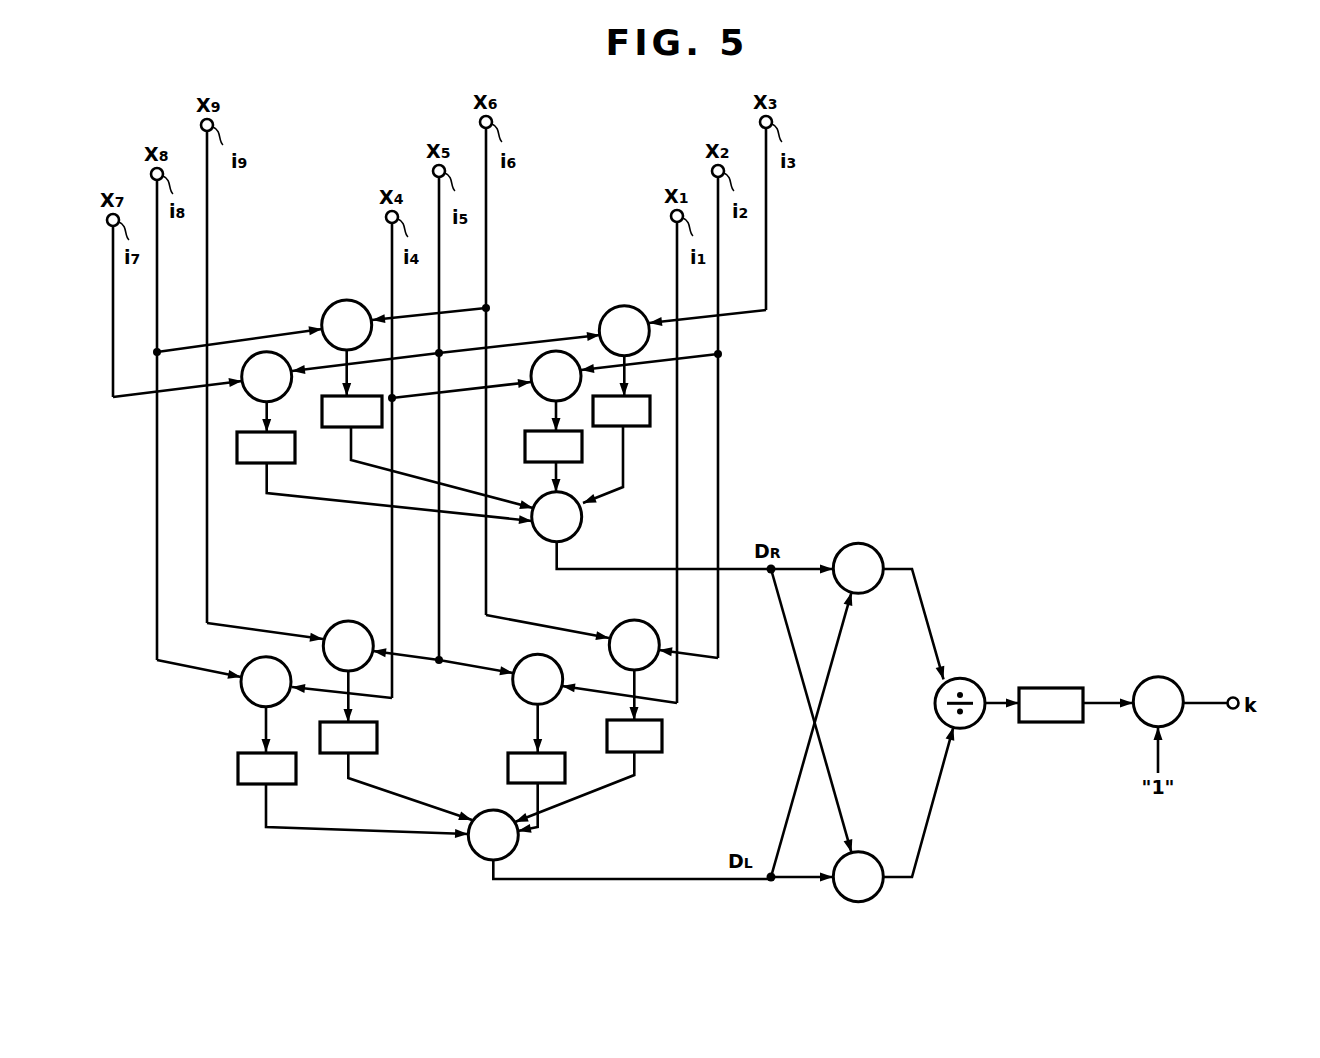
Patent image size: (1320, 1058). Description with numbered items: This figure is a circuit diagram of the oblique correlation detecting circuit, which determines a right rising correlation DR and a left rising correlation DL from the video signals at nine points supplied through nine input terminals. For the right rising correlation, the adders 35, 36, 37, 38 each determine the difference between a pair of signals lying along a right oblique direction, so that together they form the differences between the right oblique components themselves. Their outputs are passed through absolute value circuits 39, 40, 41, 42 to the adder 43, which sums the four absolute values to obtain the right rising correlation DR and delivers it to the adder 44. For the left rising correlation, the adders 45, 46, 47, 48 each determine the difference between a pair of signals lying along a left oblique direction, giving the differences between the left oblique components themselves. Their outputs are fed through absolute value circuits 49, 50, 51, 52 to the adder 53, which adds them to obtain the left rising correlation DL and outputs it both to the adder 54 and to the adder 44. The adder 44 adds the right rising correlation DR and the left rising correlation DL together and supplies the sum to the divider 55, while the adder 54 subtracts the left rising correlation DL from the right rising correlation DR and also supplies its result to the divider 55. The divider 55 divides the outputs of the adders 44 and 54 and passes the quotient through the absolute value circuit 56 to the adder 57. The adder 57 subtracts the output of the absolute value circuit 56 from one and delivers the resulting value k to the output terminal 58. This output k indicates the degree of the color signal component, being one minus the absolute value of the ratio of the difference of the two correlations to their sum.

The adder 35 is at (556, 351).
The adder 36 is at (624, 306).
The adder 37 is at (267, 351).
The adder 38 is at (346, 300).
The absolute value circuit 39 is at (525, 445).
The absolute value circuit 40 is at (636, 427).
The absolute value circuit 41 is at (255, 463).
The absolute value circuit 42 is at (335, 427).
The adder 43 is at (582, 522).
The adder 44 is at (858, 543).
The adder 45 is at (513, 690).
The adder 46 is at (634, 620).
The adder 47 is at (241, 690).
The adder 48 is at (348, 621).
The absolute value circuit 49 is at (508, 768).
The absolute value circuit 50 is at (662, 735).
The absolute value circuit 51 is at (238, 768).
The absolute value circuit 52 is at (377, 737).
The adder 53 is at (519, 842).
The adder 54 is at (878, 860).
The divider 55 is at (960, 678).
The absolute value circuit 56 is at (1055, 688).
The adder 57 is at (1158, 677).
The output terminal 58 is at (1233, 697).